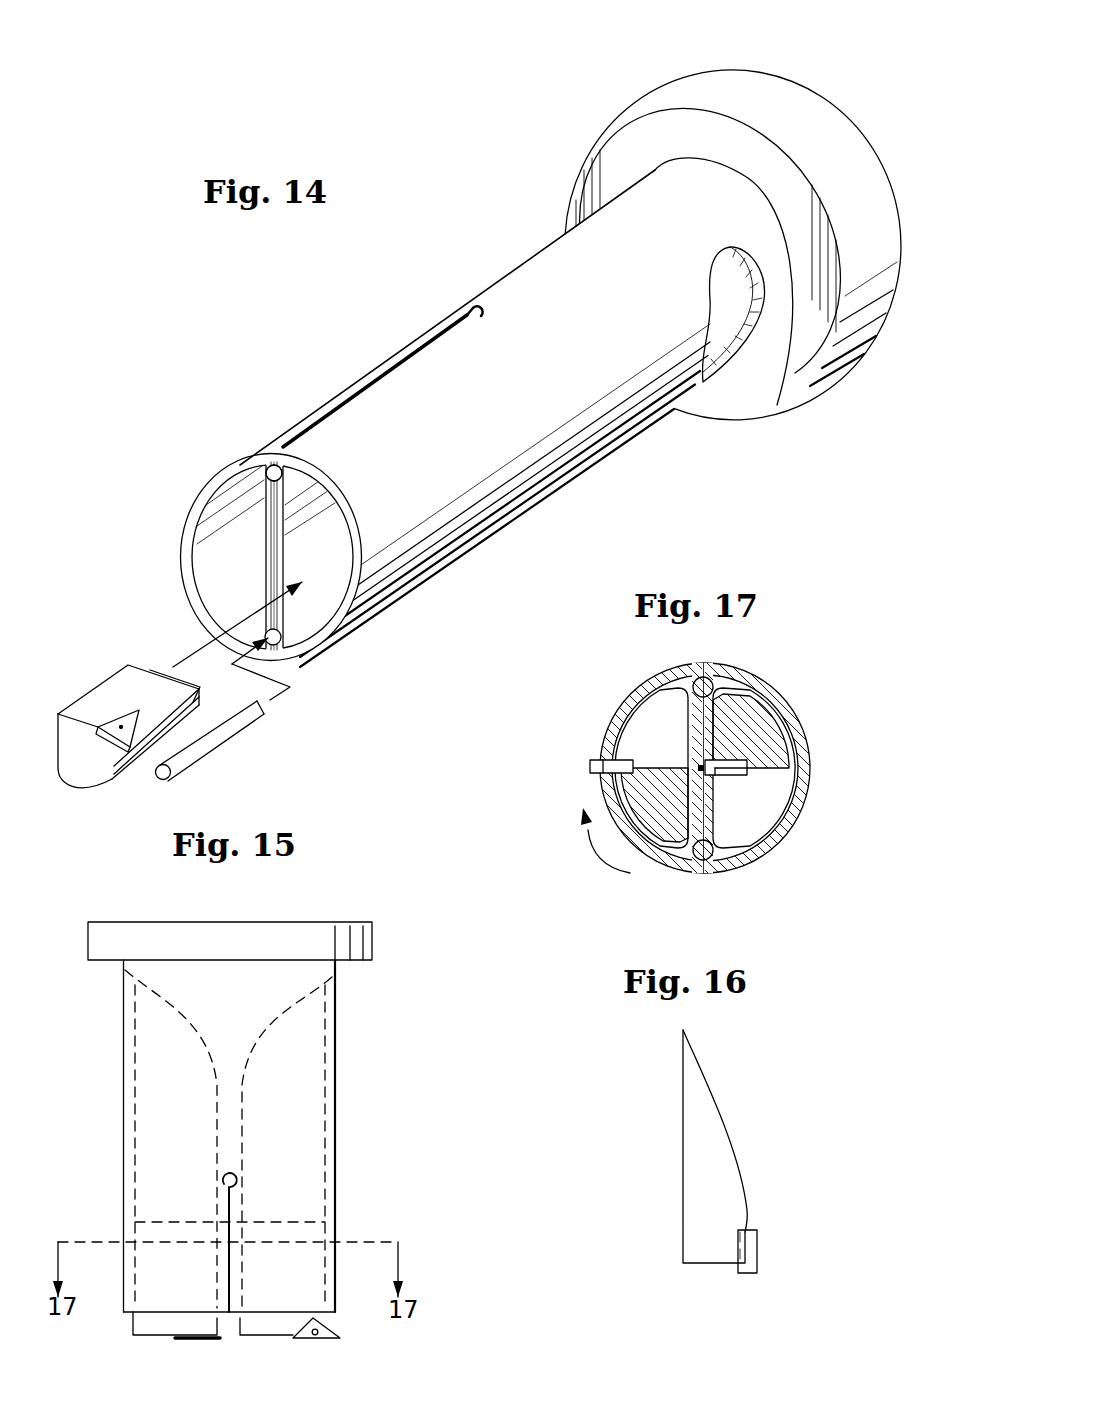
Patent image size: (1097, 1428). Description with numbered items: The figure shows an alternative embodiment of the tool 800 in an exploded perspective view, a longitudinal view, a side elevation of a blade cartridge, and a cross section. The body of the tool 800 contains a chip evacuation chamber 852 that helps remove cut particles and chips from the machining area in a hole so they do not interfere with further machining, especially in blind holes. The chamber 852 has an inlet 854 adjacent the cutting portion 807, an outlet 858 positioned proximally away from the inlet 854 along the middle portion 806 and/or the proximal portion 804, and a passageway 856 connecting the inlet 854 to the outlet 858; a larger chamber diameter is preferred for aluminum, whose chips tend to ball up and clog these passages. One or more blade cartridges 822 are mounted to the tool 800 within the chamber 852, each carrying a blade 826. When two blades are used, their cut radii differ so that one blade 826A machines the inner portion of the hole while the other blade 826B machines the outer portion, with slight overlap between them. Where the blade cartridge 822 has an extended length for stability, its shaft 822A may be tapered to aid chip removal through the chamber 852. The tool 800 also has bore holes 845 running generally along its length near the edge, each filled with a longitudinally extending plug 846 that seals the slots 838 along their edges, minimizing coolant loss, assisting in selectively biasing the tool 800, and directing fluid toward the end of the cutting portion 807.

In FIG. 14, the tool 800 is at (290, 358).
In FIG. 17, the tool 800 is at (762, 845).
In FIG. 15, the tool 800 is at (113, 1055).
In FIG. 14, the proximal portion 804 is at (655, 85).
In FIG. 14, the middle portion 806 is at (512, 234).
In FIG. 14, the cutting portion 807 is at (463, 560).
In FIG. 14, the blade cartridge 822 is at (80, 778).
In FIG. 15, the blade cartridge 822 is at (267, 1333).
In FIG. 16, the blade cartridge 822 is at (732, 1185).
In FIG. 16, the shaft 822A is at (693, 1117).
In FIG. 14, the blade 826 is at (135, 712).
In FIG. 15, the blade 826 is at (330, 1326).
In FIG. 16, the blade 826 is at (758, 1252).
In FIG. 17, the blade 826A is at (730, 776).
In FIG. 17, the blade 826B is at (590, 768).
In FIG. 14, the slot 838 is at (418, 356).
In FIG. 15, the slot 838 is at (228, 1213).
In FIG. 14, the bore hole 845 is at (268, 465).
In FIG. 14, the plug 846 is at (224, 739).
In FIG. 15, the chip evacuation chamber 852 is at (298, 1152).
In FIG. 14, the inlet 854 is at (228, 548).
In FIG. 15, the inlet 854 is at (229, 1323).
In FIG. 15, the passageway 856 is at (340, 1087).
In FIG. 14, the outlet 858 is at (724, 322).
In FIG. 15, the outlet 858 is at (353, 1017).